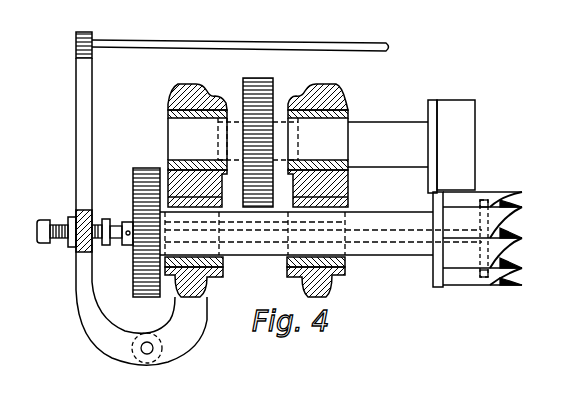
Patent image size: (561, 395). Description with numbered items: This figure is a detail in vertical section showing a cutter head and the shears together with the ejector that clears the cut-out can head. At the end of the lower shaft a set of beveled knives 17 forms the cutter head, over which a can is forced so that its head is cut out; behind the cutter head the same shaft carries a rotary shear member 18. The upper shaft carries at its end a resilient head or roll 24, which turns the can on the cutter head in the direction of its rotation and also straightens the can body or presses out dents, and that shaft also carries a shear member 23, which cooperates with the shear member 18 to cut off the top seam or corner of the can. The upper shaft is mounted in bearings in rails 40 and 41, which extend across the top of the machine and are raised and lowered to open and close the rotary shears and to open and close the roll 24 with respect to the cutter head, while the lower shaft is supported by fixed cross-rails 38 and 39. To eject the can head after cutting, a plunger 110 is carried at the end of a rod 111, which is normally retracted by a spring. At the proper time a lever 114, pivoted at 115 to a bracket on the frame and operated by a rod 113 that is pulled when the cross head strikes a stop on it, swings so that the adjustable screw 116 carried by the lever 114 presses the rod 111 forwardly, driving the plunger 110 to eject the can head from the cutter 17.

The rod 113 is at (230, 43).
The lever 114 is at (92, 106).
The pivot 115 is at (148, 360).
The adjustable screw 116 is at (40, 246).
The rod 111 is at (117, 247).
The rail 40 is at (205, 85).
The rail 41 is at (334, 93).
The fixed cross-rail 38 is at (207, 290).
The fixed cross-rail 39 is at (335, 293).
The shear member 23 is at (432, 100).
The resilient head or roll 24 is at (470, 128).
The rotary shear member 18 is at (431, 284).
The beveled knives 17 is at (485, 287).
The plunger 110 is at (490, 212).